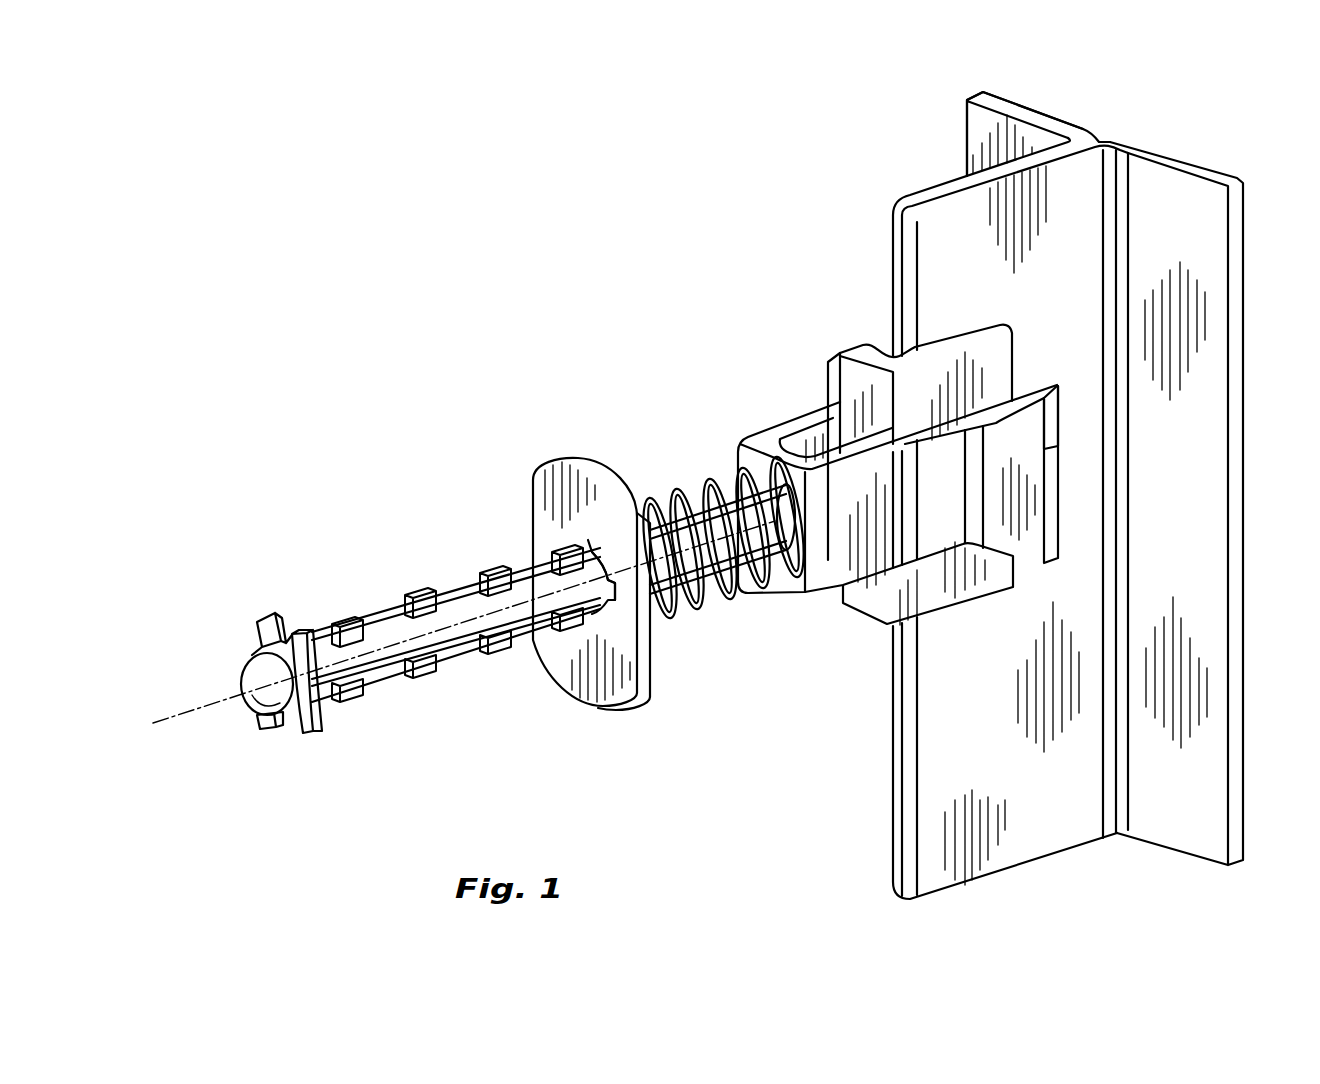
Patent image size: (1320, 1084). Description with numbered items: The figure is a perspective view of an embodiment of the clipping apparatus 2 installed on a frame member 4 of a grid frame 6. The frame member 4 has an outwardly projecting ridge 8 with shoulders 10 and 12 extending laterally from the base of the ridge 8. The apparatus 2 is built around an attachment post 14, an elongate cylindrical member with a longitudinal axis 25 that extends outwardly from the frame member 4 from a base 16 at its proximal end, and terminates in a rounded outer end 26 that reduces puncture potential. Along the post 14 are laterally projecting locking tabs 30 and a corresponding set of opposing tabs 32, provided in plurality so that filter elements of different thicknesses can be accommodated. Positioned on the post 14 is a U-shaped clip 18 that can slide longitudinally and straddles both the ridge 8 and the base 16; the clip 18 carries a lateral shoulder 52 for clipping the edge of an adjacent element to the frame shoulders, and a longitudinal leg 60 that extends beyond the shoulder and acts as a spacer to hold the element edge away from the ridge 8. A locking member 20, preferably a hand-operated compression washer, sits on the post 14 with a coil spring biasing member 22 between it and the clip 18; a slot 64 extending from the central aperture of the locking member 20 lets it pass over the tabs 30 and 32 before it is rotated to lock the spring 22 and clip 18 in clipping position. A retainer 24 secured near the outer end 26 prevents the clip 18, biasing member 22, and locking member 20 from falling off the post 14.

The clipping apparatus 2 is at (460, 346).
The frame member 4 is at (977, 122).
The grid frame 6 is at (1025, 134).
The projecting ridge 8 is at (907, 820).
The shoulder 10 is at (968, 172).
The shoulder 12 is at (1183, 832).
The attachment post 14 is at (390, 628).
The base 16 is at (863, 373).
The clip 18 is at (818, 580).
The locking member 20 is at (563, 487).
The biasing member 22 is at (713, 483).
The retainer 24 is at (258, 622).
The longitudinal axis 25 is at (190, 722).
The rounded outer end 26 is at (260, 672).
The locking tab 30 is at (417, 680).
The laterally projecting tab 32 is at (340, 623).
The lateral shoulder 52 is at (1040, 503).
The longitudinal leg 60 is at (1047, 421).
The slot 64 is at (603, 587).